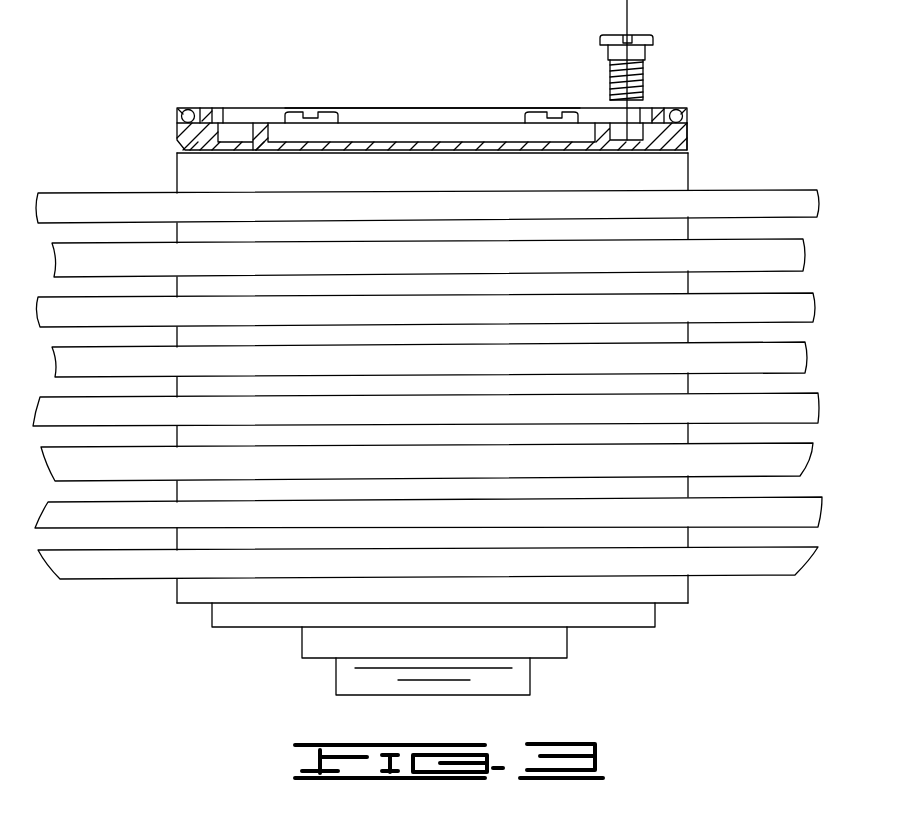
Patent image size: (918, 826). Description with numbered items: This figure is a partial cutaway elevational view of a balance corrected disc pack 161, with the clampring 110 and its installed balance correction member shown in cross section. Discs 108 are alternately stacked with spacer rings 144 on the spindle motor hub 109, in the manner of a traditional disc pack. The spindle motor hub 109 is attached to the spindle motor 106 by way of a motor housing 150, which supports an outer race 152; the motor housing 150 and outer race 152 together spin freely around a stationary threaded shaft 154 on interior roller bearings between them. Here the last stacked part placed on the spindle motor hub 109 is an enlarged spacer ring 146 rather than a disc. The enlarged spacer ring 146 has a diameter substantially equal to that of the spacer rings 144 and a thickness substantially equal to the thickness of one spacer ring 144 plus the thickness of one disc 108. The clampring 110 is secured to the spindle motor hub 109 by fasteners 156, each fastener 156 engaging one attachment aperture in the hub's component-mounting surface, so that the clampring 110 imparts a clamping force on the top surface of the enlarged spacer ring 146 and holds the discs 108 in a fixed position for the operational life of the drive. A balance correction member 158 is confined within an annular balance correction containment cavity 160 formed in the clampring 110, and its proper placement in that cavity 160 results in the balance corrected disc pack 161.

The spindle motor 106 is at (380, 60).
The disc 108 is at (737, 310).
The spindle motor hub 109 is at (193, 607).
The clampring 110 is at (167, 135).
The spacer ring 144 is at (687, 230).
The enlarged spacer ring 146 is at (175, 173).
The motor housing 150 is at (272, 630).
The outer race 152 is at (547, 643).
The stationary threaded shaft 154 is at (373, 677).
The fastener 156 is at (327, 117).
The balance correction member 158 is at (195, 108).
The annular balance correction containment cavity 160 is at (178, 98).
The balance corrected disc pack 161 is at (728, 120).